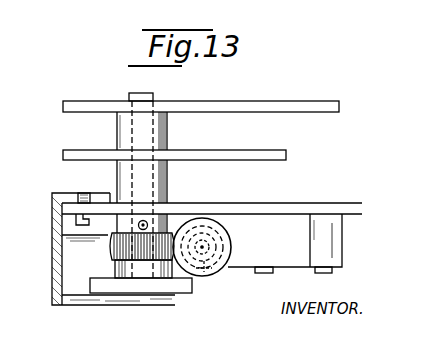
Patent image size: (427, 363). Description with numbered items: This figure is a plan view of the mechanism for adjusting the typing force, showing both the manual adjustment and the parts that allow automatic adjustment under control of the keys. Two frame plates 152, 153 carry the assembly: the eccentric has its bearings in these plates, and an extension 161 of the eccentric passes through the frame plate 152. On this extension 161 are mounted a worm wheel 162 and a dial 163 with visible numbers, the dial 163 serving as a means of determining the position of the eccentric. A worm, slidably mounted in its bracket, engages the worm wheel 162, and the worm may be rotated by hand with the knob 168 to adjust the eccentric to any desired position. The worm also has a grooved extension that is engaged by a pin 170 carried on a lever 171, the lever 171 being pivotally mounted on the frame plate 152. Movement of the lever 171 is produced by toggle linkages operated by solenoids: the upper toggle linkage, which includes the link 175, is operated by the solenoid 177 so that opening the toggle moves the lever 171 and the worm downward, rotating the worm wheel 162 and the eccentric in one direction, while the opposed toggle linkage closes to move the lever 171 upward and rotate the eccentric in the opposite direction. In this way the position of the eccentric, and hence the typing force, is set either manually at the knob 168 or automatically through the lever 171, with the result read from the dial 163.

The frame plate 152 is at (230, 151).
The frame plate 153 is at (217, 103).
The extension of the eccentric 161 is at (140, 94).
The worm wheel 162 is at (162, 235).
The dial 163 is at (98, 283).
The knob 168 is at (232, 243).
The pin 170 is at (203, 270).
The lever 171 is at (236, 268).
The link 175 is at (263, 273).
The solenoid 177 is at (77, 297).